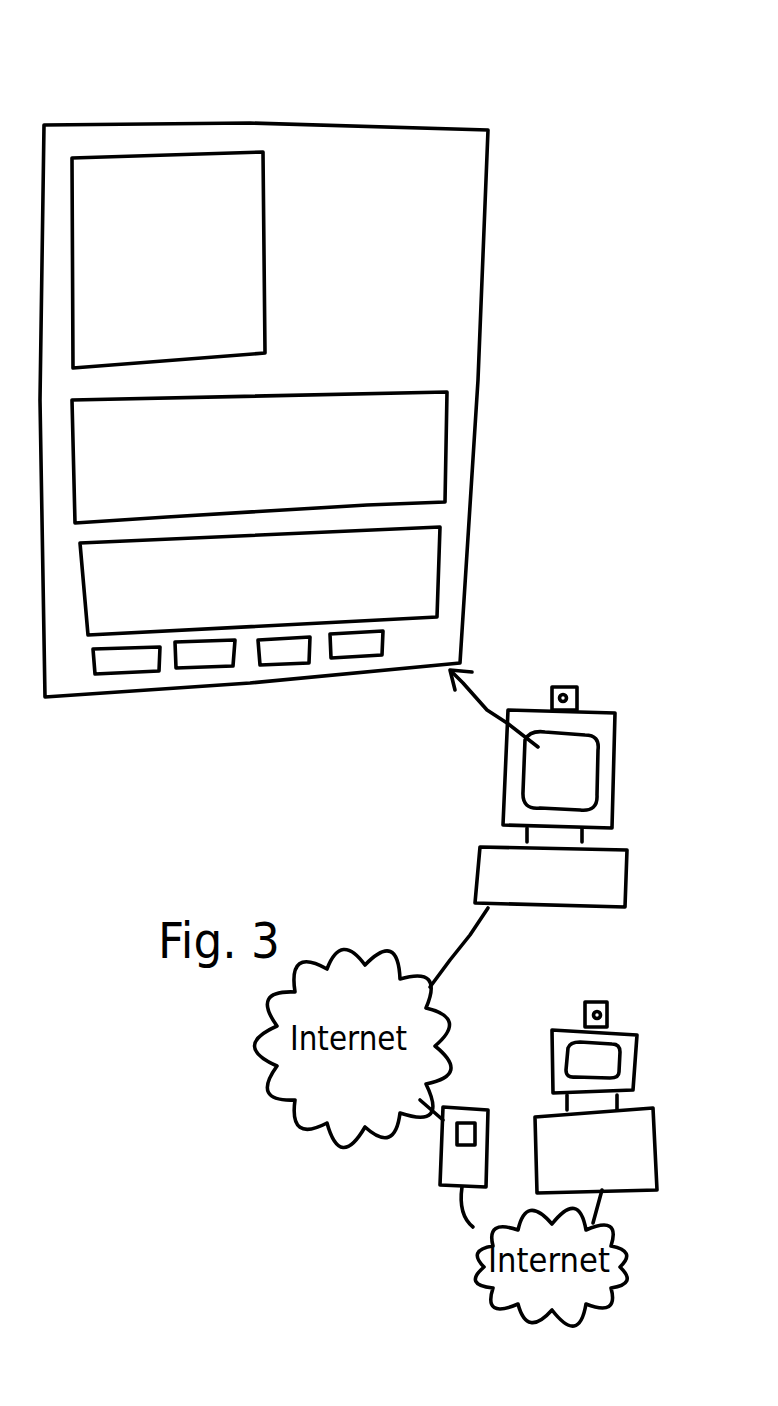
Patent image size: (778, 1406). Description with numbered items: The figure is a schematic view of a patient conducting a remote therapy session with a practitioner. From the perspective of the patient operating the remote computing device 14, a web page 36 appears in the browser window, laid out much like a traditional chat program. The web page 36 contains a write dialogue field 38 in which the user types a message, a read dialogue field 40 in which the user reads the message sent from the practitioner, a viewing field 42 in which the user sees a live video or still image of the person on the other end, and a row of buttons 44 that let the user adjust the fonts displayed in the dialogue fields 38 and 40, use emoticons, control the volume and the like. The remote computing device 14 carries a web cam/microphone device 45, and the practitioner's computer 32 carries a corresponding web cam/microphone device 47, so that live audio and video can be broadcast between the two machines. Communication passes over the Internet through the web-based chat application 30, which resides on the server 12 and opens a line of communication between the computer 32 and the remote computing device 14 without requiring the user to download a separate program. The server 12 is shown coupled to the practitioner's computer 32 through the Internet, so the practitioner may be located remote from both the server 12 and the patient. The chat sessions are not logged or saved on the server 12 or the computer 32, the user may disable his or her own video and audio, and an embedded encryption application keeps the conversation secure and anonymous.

The web page 36 is at (307, 135).
The viewing field 42 is at (118, 213).
The read dialogue field 40 is at (423, 457).
The write dialogue field 38 is at (343, 560).
The buttons 44 is at (285, 652).
The web cam/microphone device 45 is at (575, 687).
The remote computing device 14 is at (623, 850).
The chat application 30 is at (468, 1123).
The server 12 is at (457, 1173).
The web cam/microphone device 47 is at (608, 1007).
The computer 32 is at (653, 1127).